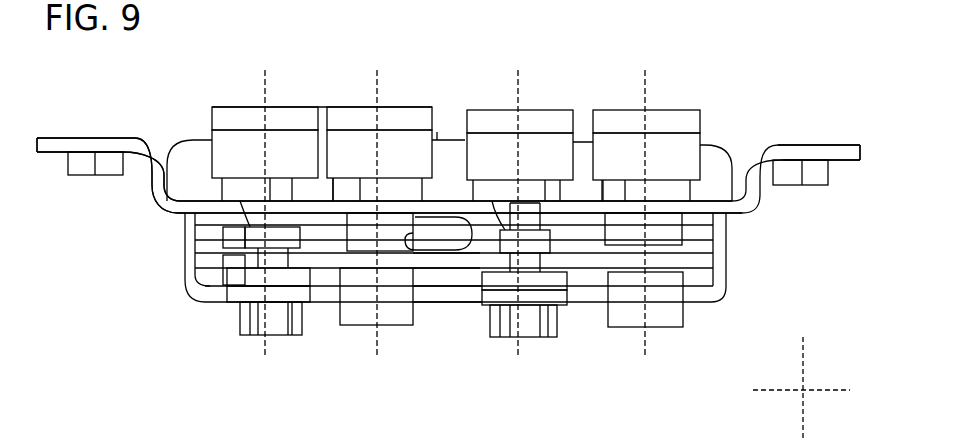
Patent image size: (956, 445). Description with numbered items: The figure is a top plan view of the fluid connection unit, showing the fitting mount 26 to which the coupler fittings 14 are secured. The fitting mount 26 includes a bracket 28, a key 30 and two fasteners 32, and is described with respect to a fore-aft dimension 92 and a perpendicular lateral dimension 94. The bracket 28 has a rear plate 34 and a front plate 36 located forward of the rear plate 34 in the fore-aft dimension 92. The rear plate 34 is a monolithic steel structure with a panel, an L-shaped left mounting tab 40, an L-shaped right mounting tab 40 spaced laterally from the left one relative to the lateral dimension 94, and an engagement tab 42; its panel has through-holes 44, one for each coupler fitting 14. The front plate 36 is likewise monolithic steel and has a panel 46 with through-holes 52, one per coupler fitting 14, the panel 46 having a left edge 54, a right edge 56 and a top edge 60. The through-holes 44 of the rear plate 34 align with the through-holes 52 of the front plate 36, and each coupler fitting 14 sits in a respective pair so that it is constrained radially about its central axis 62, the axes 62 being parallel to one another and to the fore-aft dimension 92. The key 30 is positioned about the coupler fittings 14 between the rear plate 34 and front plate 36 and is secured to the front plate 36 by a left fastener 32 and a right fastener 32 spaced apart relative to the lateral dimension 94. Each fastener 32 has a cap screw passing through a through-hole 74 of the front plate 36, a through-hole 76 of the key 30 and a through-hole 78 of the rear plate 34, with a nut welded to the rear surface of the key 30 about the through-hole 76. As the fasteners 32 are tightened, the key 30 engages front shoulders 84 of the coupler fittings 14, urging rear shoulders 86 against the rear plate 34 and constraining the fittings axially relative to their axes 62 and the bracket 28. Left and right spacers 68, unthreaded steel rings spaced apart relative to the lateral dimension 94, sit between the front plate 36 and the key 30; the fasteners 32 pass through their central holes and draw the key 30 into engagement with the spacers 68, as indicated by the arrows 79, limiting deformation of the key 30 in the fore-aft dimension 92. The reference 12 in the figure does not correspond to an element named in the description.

The terminal assembly 12 is at (776, 294).
The coupler fitting 14 is at (343, 112).
The fitting mount 26 is at (752, 128).
The bracket 28 is at (755, 212).
The key 30 is at (585, 268).
The fastener 32 is at (250, 335).
The rear plate 34 is at (145, 138).
The front plate 36 is at (463, 302).
The mounting tab 40 is at (70, 138).
The engagement tab 42 is at (441, 140).
The through-hole 44 is at (348, 201).
The panel 46 is at (695, 304).
The through-hole 52 is at (232, 318).
The left edge 54 is at (728, 304).
The right edge 56 is at (185, 296).
The top edge 60 is at (430, 302).
The central axis 62 is at (643, 78).
The spacer 68 is at (312, 305).
The through-hole 74 is at (290, 335).
The through-hole 76 is at (268, 335).
The through-hole 78 is at (278, 201).
The arrow 79 is at (505, 201).
The front shoulder 84 is at (420, 233).
The rear shoulder 86 is at (422, 205).
The fore-aft dimension 92 is at (807, 363).
The lateral dimension 94 is at (807, 392).